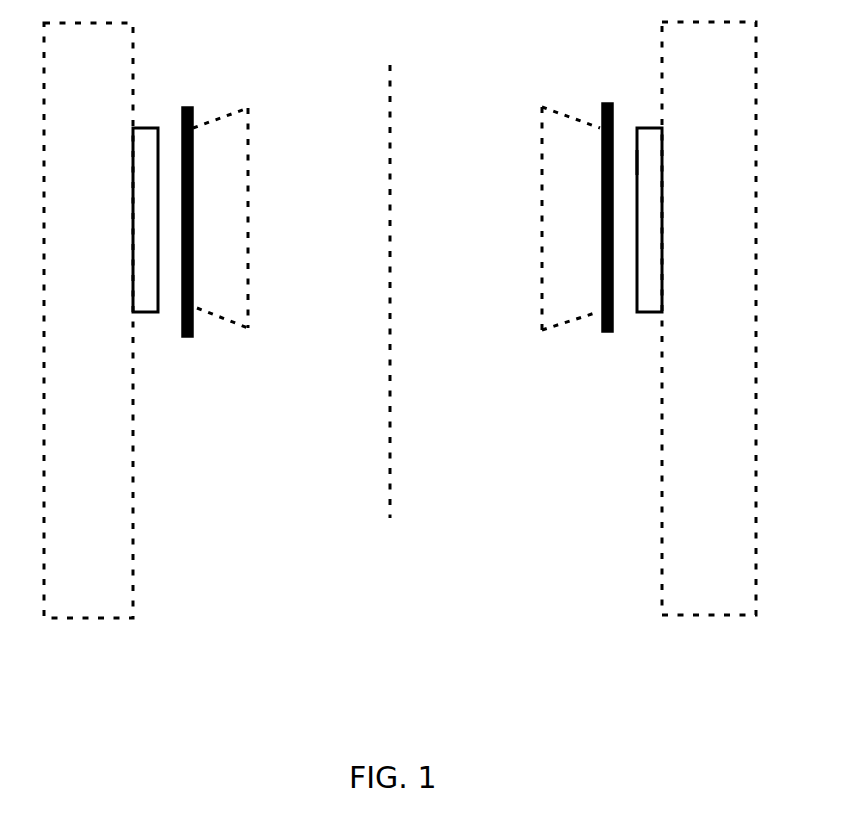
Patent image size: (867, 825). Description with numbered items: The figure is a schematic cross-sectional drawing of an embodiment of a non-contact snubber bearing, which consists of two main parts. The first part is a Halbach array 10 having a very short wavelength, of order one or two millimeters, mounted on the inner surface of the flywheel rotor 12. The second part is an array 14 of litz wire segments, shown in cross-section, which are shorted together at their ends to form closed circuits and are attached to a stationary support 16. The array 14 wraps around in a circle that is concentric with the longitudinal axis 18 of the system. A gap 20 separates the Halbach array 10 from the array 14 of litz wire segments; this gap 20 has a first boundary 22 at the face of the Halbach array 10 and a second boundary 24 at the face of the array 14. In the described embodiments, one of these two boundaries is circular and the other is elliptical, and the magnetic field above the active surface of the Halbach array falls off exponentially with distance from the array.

The Halbach array 10 is at (145, 312).
The flywheel rotor 12 is at (133, 438).
The array of litz wire segments 14 is at (608, 103).
The stationary support 16 is at (542, 143).
The longitudinal axis 18 is at (390, 409).
The gap 20 is at (628, 326).
The first boundary 22 is at (640, 156).
The second boundary 24 is at (613, 270).